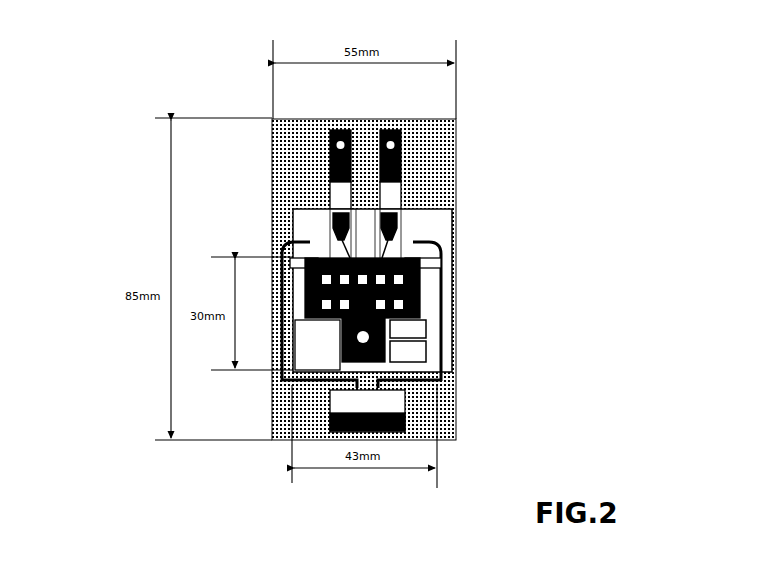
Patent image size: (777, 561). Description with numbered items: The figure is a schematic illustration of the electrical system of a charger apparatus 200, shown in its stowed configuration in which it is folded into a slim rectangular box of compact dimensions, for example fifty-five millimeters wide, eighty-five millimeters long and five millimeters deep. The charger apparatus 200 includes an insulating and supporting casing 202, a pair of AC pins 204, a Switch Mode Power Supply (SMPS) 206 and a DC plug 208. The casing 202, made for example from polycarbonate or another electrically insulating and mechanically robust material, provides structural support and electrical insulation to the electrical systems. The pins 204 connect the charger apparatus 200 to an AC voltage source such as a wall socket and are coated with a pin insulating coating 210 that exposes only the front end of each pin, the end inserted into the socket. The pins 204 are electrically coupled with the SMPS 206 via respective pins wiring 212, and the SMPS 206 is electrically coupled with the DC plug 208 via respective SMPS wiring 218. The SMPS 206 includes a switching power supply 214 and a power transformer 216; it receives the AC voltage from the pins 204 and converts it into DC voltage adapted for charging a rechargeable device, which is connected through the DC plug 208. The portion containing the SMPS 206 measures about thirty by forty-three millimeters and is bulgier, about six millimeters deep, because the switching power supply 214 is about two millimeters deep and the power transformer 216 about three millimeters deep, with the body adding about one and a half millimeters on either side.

The charger apparatus 200 is at (228, 64).
The insulating and supporting casing 202 is at (458, 377).
The AC pins 204 is at (404, 159).
The Switch Mode Power Supply (SMPS) 206 is at (290, 388).
The DC plug 208 is at (407, 432).
The pin insulating coating 210 is at (407, 195).
The pins wiring 212 is at (383, 248).
The switching power supply 214 is at (424, 295).
The power transformer 216 is at (455, 337).
The SMPS wiring 218 is at (455, 282).